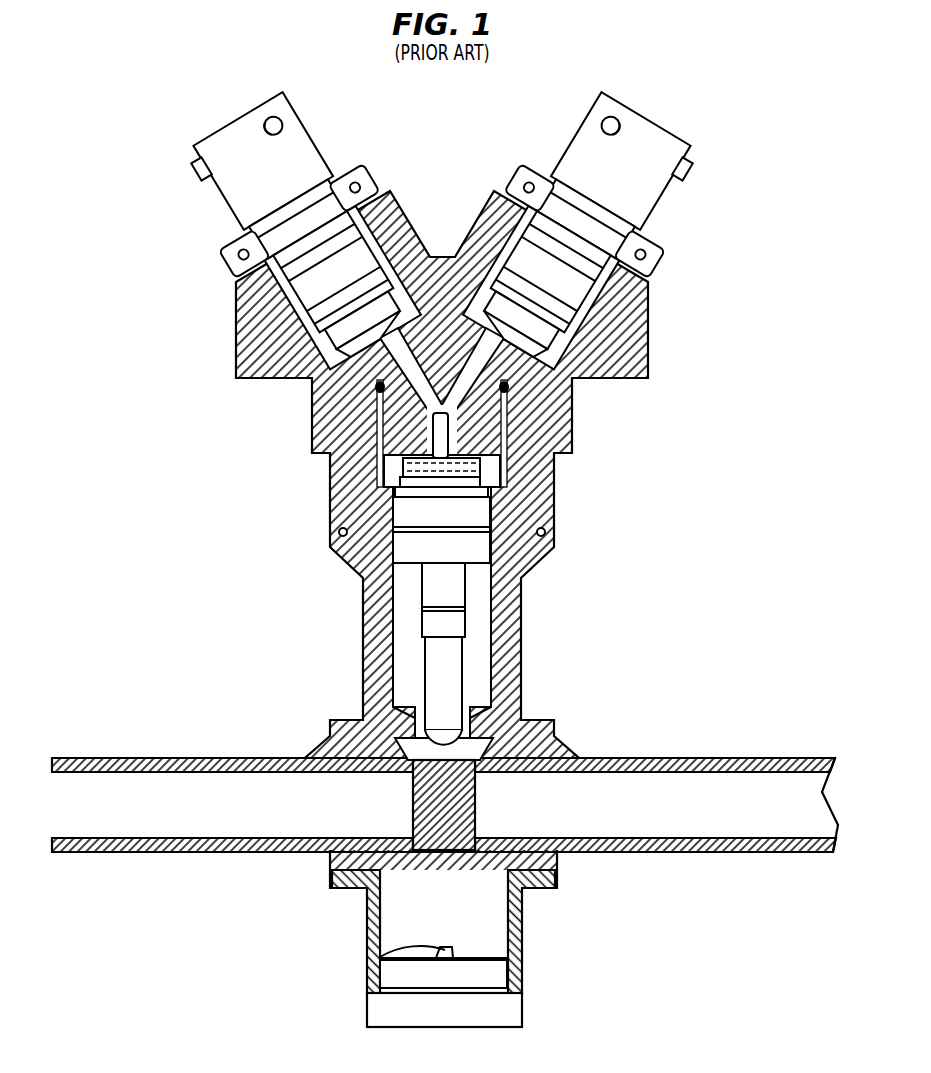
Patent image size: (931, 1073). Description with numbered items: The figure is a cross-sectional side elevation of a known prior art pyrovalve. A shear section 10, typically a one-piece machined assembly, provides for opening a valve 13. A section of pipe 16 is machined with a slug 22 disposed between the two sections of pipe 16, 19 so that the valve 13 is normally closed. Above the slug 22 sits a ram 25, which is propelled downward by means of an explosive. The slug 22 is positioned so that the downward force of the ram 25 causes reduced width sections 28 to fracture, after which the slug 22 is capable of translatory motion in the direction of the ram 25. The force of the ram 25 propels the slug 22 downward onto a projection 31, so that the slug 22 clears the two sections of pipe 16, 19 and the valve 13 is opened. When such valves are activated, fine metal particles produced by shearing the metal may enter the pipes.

The shear section 10 is at (515, 810).
The valve 13 is at (272, 963).
The section of pipe 16 is at (113, 852).
The section of pipe 19 is at (741, 852).
The slug 22 is at (437, 850).
The ram 25 is at (452, 684).
The reduced width sections 28 is at (398, 780).
The projection 31 is at (442, 950).